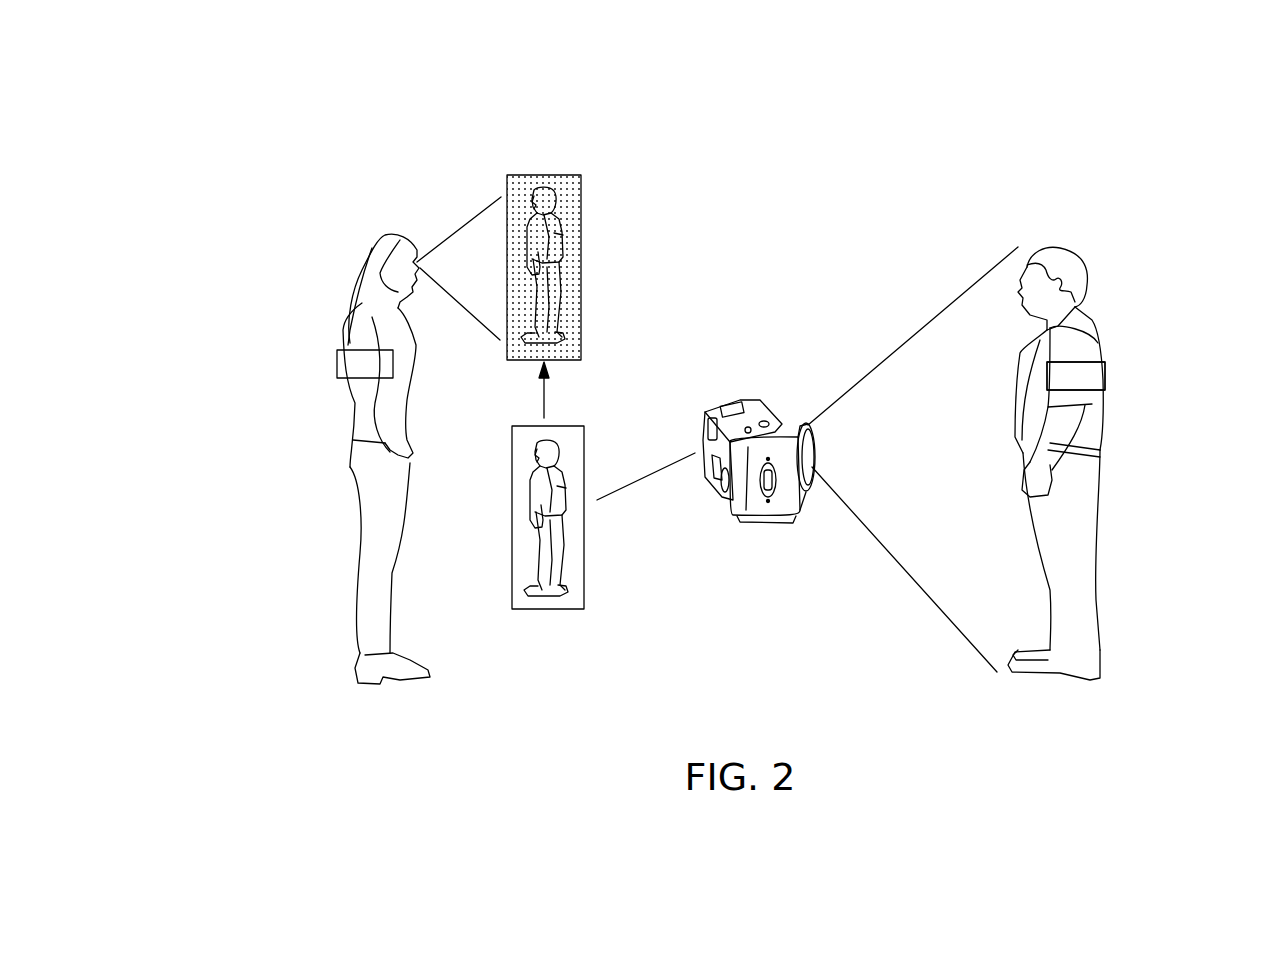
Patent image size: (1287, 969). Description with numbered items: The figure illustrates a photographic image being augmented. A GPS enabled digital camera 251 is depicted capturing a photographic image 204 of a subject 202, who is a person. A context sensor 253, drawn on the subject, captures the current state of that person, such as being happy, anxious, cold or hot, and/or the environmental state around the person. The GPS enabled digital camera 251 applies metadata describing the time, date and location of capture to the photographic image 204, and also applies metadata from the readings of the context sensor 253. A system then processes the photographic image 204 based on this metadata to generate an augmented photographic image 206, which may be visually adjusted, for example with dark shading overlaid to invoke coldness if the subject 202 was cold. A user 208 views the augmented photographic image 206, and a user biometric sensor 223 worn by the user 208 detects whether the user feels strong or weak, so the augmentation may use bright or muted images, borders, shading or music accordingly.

The subject 202 is at (1058, 247).
The photographic image 204 is at (545, 612).
The augmented photographic image 206 is at (545, 175).
The user 208 is at (387, 232).
The user biometric sensor 223 is at (337, 362).
The GPS enabled digital camera 251 is at (735, 400).
The context sensor 253 is at (1105, 378).